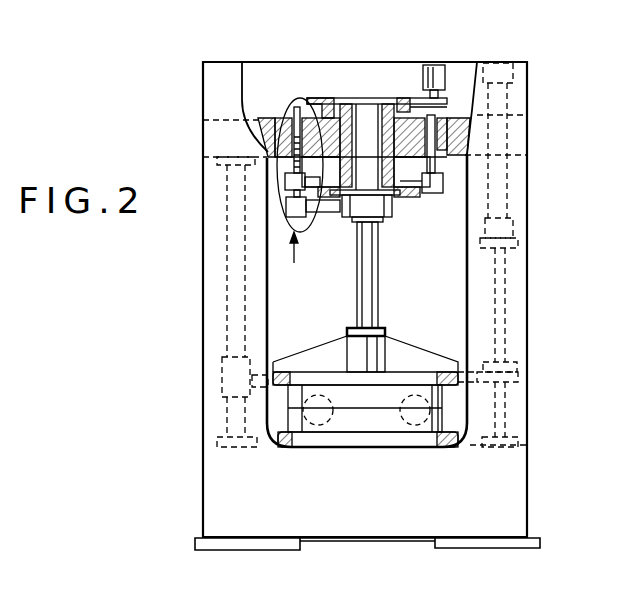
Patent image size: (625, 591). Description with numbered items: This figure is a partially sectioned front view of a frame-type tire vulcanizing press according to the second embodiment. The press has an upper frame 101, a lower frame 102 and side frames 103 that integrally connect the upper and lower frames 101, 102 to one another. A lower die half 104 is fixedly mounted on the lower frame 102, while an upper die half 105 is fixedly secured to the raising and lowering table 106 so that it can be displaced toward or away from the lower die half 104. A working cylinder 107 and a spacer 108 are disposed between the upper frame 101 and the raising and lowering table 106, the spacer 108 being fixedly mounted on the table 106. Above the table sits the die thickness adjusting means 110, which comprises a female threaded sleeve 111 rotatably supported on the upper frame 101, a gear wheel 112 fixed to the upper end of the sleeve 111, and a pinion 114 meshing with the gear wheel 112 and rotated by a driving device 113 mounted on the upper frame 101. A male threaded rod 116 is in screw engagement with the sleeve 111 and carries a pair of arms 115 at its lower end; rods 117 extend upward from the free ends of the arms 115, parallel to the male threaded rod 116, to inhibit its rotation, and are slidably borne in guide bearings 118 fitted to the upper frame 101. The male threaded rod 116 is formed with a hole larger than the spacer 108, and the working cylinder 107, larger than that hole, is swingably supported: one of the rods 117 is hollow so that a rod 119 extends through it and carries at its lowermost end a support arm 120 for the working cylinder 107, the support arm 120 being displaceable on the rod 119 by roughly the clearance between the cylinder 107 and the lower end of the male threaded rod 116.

The upper frame 101 is at (263, 62).
The lower frame 102 is at (361, 541).
The side frames 103 is at (203, 290).
The lower die half 104 is at (442, 418).
The upper die half 105 is at (442, 397).
The raising and lowering table 106 is at (407, 342).
The working cylinder 107 is at (393, 208).
The spacer 108 is at (381, 262).
The die thickness adjusting means 110 is at (323, 94).
The female threaded sleeve 111 is at (318, 160).
The gear wheel 112 is at (313, 98).
The driving device 113 is at (447, 78).
The pinion 114 is at (450, 101).
The arms 115 is at (433, 194).
The male threaded rod 116 is at (357, 104).
The rods 117 is at (445, 172).
The guide bearings 118 is at (465, 143).
The rod 119 is at (297, 104).
The support arm 120 is at (331, 198).